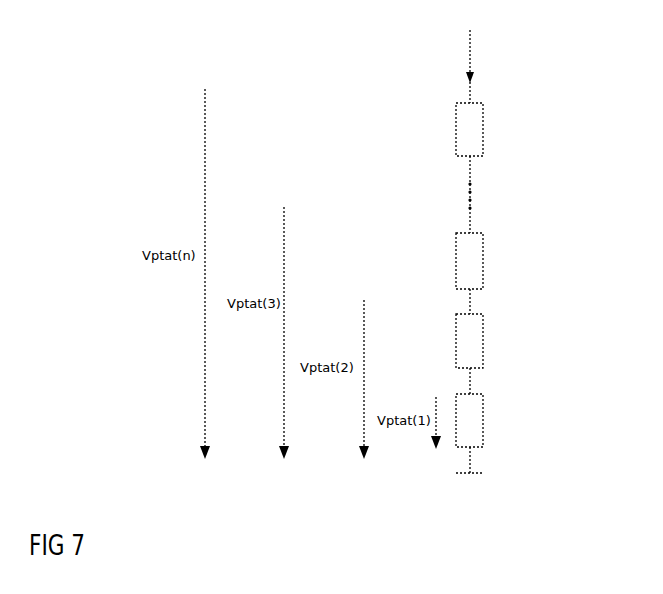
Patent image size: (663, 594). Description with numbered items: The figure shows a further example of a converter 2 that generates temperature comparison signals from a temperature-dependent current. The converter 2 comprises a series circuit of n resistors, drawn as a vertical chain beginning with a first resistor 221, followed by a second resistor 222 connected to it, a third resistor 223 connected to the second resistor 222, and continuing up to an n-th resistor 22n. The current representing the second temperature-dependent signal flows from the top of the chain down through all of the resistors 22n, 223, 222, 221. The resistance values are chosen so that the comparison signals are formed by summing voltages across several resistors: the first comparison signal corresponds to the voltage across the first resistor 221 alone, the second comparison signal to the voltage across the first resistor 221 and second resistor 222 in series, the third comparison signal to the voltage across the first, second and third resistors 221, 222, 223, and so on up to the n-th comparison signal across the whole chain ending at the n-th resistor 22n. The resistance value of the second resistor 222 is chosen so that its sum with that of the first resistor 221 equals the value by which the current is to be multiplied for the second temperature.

The converter 2 is at (558, 80).
The n-th resistor 22n is at (484, 135).
The third resistor 223 is at (484, 263).
The second resistor 222 is at (484, 344).
The first resistor 221 is at (484, 422).